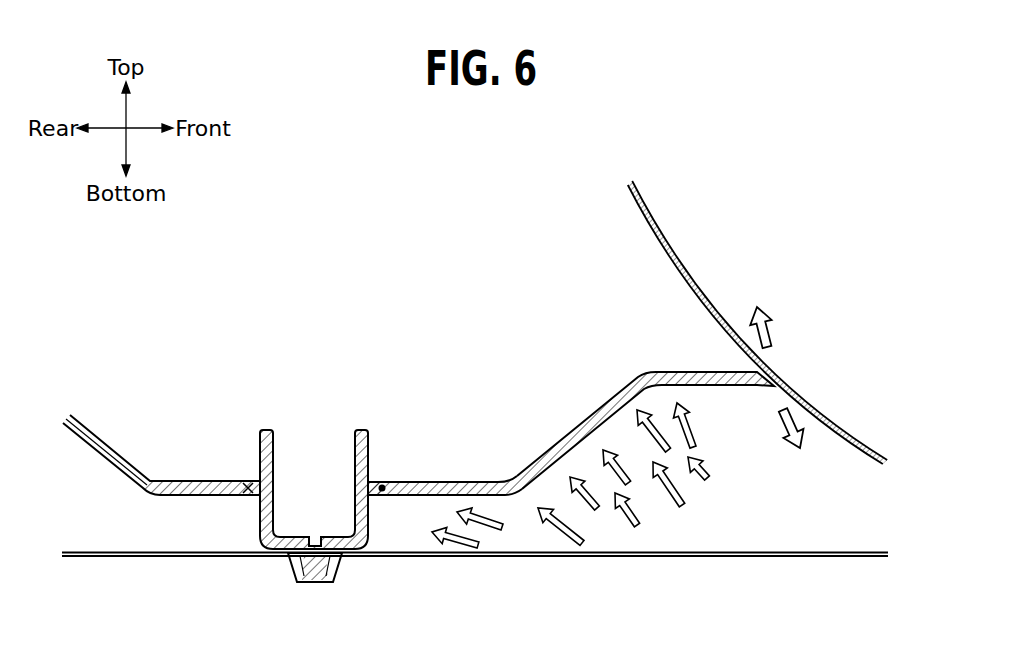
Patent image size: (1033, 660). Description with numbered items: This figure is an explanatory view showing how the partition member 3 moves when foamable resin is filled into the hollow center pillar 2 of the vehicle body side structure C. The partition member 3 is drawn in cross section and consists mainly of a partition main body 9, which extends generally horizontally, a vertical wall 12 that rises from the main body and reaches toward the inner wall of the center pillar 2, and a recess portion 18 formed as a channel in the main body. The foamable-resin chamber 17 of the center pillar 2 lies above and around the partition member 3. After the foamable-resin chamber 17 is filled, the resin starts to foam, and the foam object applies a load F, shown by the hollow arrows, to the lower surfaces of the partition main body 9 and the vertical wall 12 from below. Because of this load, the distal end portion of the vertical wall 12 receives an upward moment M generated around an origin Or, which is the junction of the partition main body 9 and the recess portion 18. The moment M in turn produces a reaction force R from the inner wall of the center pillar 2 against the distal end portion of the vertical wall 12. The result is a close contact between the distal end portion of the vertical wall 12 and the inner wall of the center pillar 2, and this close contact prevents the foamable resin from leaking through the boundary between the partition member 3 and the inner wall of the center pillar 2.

The center pillar 2 is at (668, 248).
The partition member 3 is at (570, 410).
The partition main body 9 is at (432, 481).
The vertical wall 12 is at (645, 371).
The foamable-resin chamber 17 is at (101, 518).
The recess portion 18 is at (372, 513).
The origin Or is at (383, 486).
The vehicle body side structure C is at (789, 256).
The upward moment M is at (774, 333).
The reaction force R is at (776, 430).
The load F is at (647, 510).